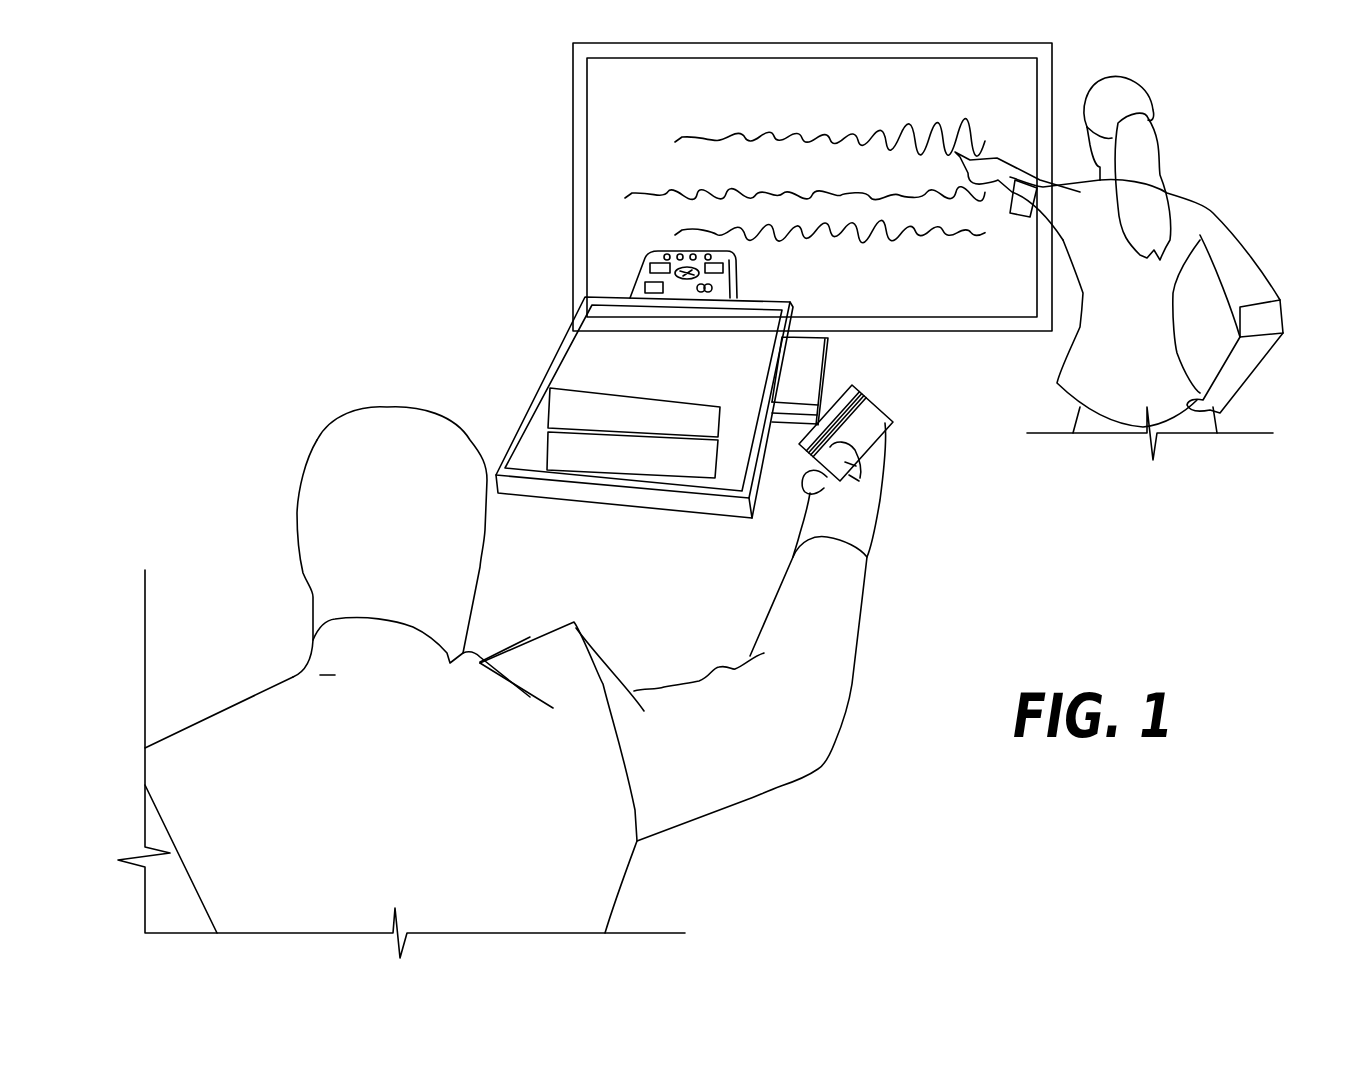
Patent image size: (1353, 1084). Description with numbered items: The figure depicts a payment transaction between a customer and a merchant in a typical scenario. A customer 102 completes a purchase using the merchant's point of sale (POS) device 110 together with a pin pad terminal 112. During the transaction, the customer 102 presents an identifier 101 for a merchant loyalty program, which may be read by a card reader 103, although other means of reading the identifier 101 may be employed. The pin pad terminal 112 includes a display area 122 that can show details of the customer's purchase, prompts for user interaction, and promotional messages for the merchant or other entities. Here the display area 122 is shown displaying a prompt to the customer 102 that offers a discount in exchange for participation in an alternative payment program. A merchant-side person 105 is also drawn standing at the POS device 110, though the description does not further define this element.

The identifier 101 is at (892, 414).
The customer 102 is at (318, 440).
The card reader 103 is at (828, 347).
The cashier 105 is at (1193, 198).
The point of sale (POS) device 110 is at (573, 147).
The pin pad terminal 112 is at (528, 407).
The display area 122 is at (563, 370).